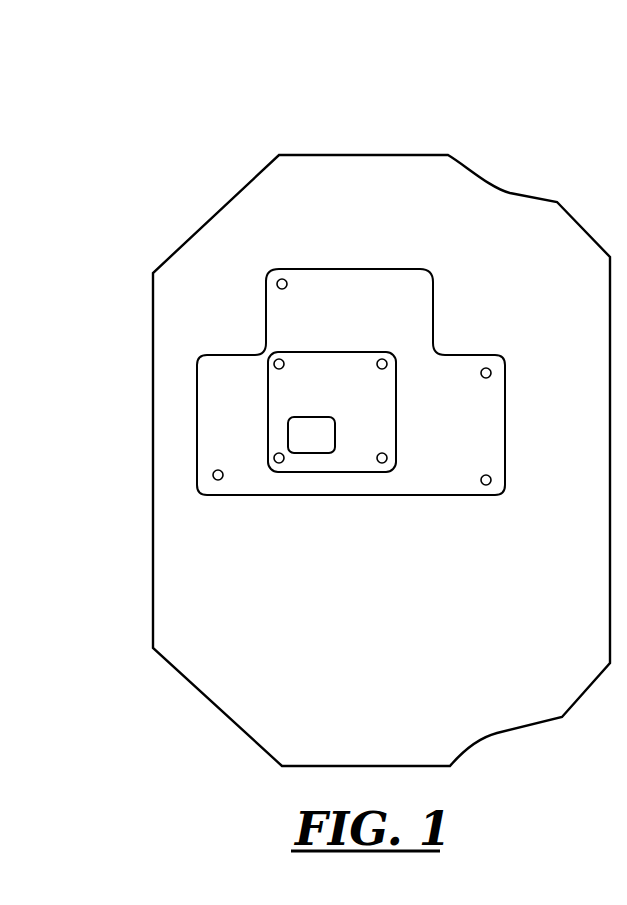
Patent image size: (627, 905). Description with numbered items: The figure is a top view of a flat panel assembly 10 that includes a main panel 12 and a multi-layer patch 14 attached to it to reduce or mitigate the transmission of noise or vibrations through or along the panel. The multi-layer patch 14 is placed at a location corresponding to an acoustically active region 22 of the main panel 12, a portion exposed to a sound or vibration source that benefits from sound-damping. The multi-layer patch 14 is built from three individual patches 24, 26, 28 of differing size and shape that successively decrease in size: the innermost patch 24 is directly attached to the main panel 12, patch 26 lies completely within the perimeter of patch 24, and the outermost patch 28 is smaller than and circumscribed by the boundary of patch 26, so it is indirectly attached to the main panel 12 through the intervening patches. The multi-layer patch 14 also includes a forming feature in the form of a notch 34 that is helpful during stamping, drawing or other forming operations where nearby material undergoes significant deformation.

The panel assembly 10 is at (148, 112).
The main panel 12 is at (332, 175).
The multi-layer patch 14 is at (331, 402).
The acoustically active region 22 is at (228, 493).
The patch 24 is at (410, 313).
The patch 26 is at (385, 425).
The patch 28 is at (320, 442).
The notch 34 is at (242, 334).